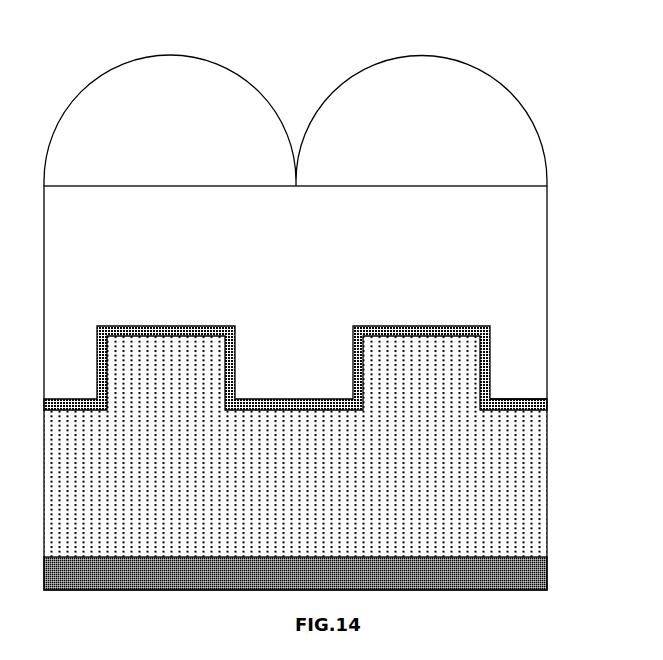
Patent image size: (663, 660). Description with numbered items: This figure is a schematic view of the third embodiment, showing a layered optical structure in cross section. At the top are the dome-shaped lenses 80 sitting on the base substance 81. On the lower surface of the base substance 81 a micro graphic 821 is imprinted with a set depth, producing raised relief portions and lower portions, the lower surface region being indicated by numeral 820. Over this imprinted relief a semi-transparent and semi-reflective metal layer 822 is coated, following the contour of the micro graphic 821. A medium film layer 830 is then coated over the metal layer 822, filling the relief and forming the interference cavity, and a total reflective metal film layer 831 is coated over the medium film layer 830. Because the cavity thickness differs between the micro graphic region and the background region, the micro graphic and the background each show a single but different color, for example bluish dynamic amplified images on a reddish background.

The lens 80 is at (539, 129).
The encapsulation layer 81 is at (548, 268).
The first layer 820 is at (548, 400).
The micro graphic 821 is at (491, 326).
The semi-transparent and semi-reflective metal layer 822 is at (190, 332).
The medium film layer 830 is at (548, 488).
The total reflective metal film layer 831 is at (548, 575).